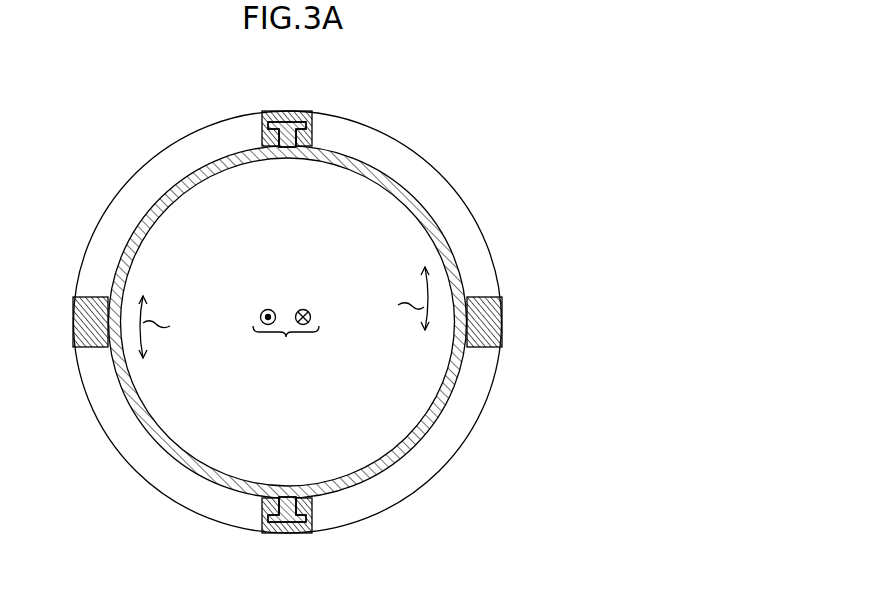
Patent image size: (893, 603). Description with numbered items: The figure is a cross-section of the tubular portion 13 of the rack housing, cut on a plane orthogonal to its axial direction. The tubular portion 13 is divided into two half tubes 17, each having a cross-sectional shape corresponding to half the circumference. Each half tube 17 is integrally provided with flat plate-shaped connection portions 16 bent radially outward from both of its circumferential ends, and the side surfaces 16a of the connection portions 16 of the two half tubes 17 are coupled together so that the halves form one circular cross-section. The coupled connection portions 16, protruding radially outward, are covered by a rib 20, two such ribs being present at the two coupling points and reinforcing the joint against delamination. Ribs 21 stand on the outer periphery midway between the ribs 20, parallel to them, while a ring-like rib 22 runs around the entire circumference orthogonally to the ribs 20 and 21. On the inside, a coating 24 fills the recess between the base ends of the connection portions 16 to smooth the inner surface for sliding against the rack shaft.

The tubular portion 13 is at (564, 93).
The connection portions 16 is at (262, 124).
The side surfaces 16a is at (283, 147).
The half tubes 17 is at (152, 207).
The rib 20 is at (287, 322).
The ribs 21 is at (73, 320).
The ring-like rib 22 is at (453, 431).
The coating 24 is at (290, 157).